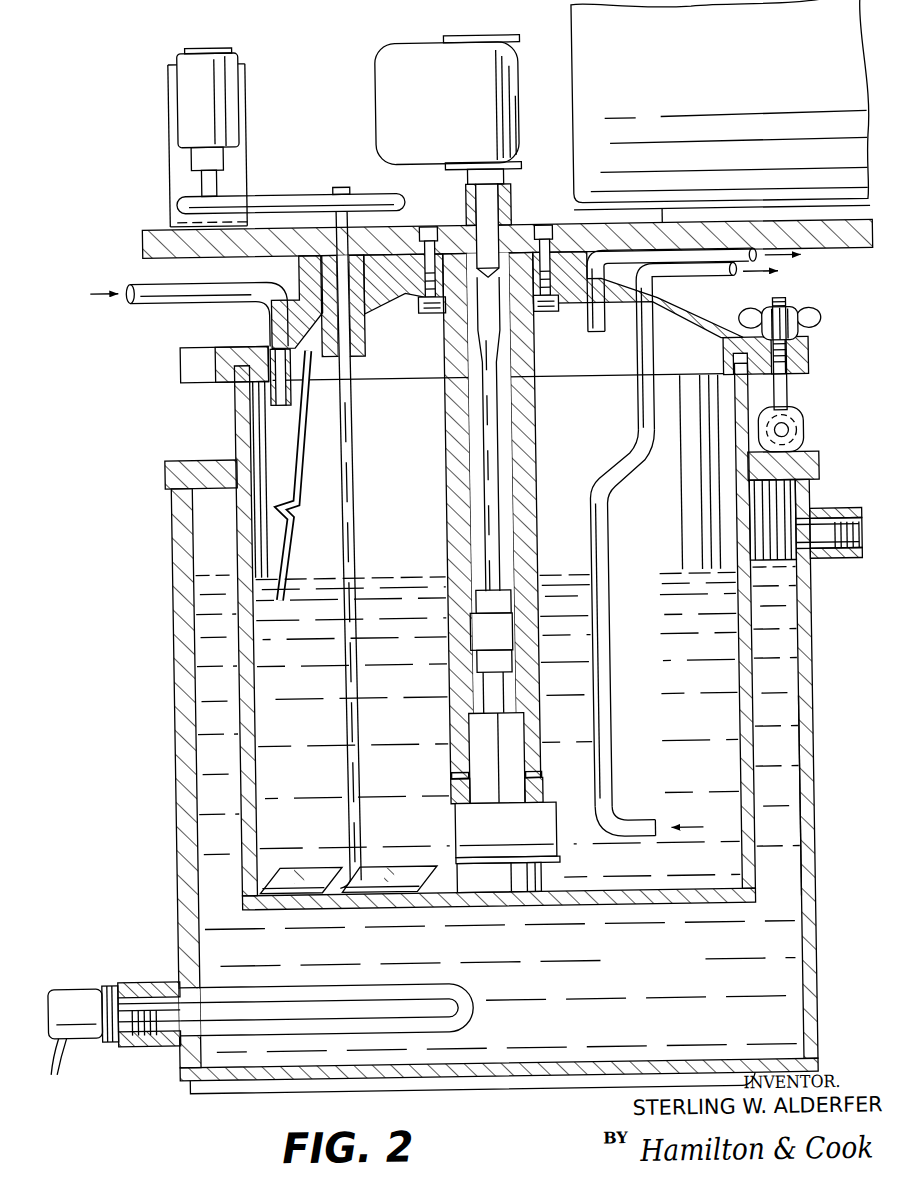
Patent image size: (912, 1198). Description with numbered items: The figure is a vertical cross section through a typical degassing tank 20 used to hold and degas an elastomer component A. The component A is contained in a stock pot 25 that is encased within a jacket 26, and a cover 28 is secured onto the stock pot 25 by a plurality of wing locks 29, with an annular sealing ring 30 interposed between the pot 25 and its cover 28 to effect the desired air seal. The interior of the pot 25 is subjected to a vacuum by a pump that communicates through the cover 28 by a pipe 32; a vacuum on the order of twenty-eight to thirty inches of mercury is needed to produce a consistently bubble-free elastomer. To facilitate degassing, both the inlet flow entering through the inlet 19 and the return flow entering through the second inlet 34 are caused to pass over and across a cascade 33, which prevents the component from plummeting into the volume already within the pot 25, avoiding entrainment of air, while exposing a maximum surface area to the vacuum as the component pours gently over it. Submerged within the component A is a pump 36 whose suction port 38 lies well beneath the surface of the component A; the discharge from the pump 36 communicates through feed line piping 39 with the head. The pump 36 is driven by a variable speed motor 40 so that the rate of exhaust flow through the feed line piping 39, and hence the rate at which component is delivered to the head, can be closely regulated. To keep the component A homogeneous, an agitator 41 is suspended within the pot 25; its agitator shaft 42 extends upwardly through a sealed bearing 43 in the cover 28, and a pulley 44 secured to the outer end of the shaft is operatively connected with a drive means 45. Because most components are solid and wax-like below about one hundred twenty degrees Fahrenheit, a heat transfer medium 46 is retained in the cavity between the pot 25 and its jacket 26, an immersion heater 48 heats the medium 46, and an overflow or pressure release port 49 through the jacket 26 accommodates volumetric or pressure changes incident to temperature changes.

The inlet 19 is at (134, 284).
The degassing tank 20 is at (170, 754).
The stock pot 25 is at (746, 752).
The jacket 26 is at (811, 823).
The cover 28 is at (183, 362).
The wing locks 29 is at (825, 324).
The annular sealing ring 30 is at (736, 359).
The pipe 32 is at (596, 333).
The cascade 33 is at (308, 461).
The second inlet 34 is at (200, 300).
The pump 36 is at (501, 538).
The suction port 38 is at (640, 818).
The feed line piping 39 is at (611, 551).
The variable speed motor 40 is at (622, 113).
The agitator 41 is at (399, 866).
The agitator shaft 42 is at (360, 556).
The sealed bearing 43 is at (366, 322).
The pulley 44 is at (306, 192).
The drive means 45 is at (233, 114).
The heat transfer medium 46 is at (499, 810).
The immersion heater 48 is at (432, 965).
The overflow port 49 is at (859, 566).
The component A is at (498, 726).